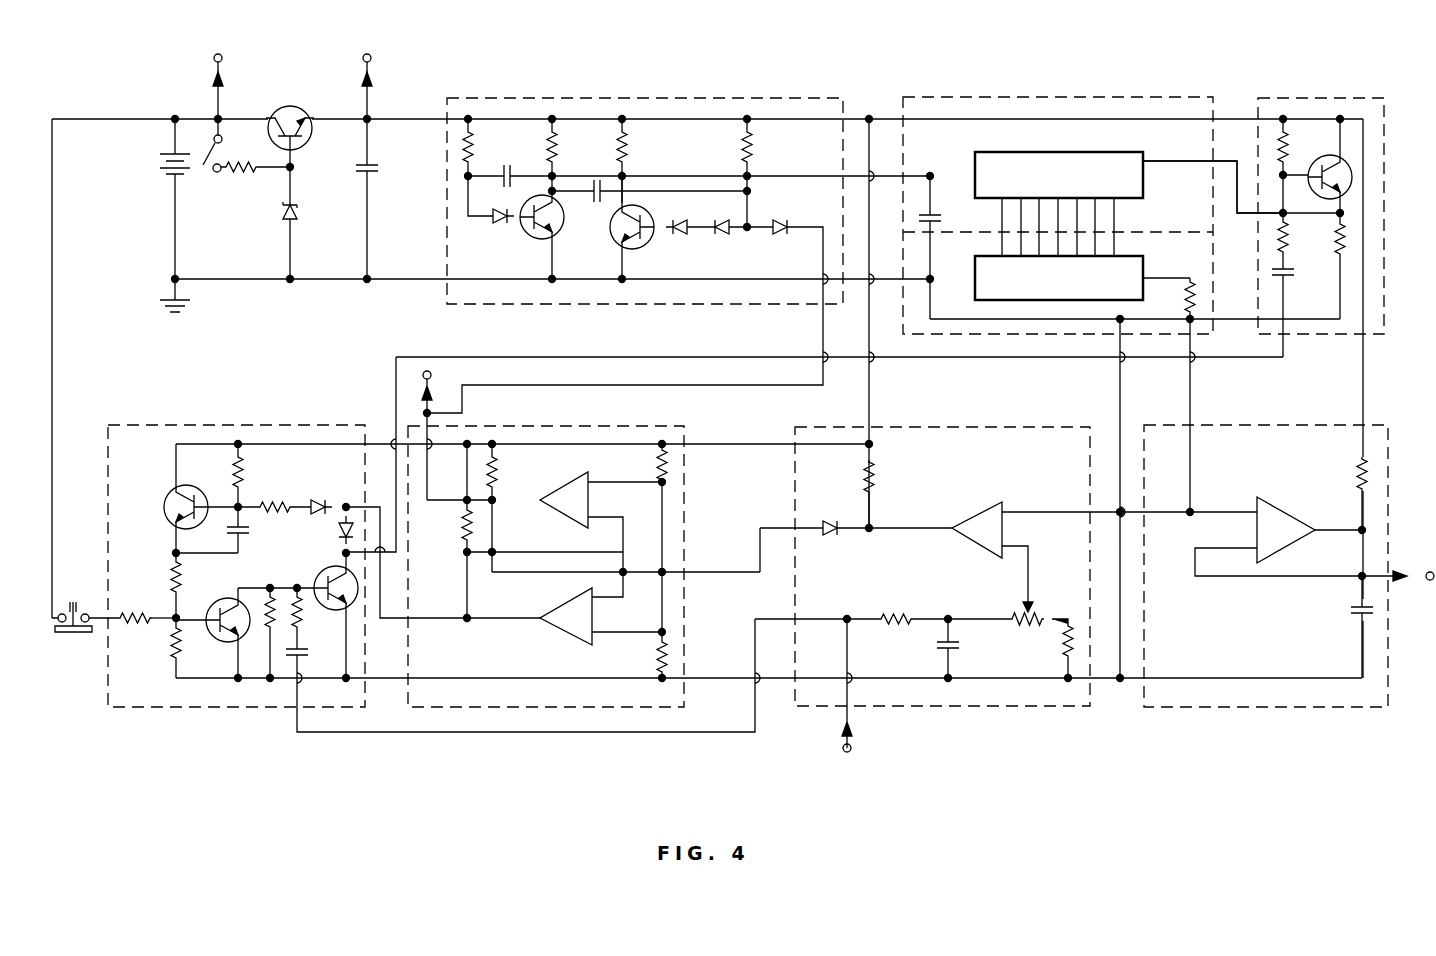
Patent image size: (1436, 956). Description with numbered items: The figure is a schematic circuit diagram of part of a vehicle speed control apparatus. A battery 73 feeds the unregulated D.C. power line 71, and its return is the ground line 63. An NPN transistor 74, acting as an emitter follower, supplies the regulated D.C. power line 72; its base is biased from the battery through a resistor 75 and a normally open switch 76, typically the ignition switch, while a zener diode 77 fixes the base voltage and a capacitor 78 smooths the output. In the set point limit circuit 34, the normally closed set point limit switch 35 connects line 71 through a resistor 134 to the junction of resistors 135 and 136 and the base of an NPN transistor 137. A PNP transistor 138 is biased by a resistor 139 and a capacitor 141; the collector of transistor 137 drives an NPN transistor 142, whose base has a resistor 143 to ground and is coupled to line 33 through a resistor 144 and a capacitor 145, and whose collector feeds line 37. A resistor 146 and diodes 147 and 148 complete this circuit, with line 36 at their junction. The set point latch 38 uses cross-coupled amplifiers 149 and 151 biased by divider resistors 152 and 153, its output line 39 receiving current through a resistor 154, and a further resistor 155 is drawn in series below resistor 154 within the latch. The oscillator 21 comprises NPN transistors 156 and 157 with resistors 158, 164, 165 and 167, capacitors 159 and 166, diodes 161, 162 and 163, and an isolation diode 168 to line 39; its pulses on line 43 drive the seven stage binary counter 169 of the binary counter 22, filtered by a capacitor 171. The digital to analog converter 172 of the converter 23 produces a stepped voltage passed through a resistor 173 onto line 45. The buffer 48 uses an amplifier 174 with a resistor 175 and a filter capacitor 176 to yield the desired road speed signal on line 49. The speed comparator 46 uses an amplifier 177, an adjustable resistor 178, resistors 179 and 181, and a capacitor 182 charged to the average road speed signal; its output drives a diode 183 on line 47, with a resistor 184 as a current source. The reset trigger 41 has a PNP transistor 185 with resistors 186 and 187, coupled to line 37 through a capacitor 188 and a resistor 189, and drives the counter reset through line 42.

The oscillator 21 is at (702, 92).
The binary counter 22 is at (1055, 92).
The converter 23 is at (1025, 338).
The line 33 is at (852, 744).
The set point limit circuit 34 is at (160, 420).
The set point limit switch 35 is at (72, 604).
The line 36 is at (392, 620).
The line 37 is at (408, 340).
The set point latch 38 is at (628, 422).
The line 39 is at (433, 380).
The reset trigger 41 is at (1285, 92).
The line 42 is at (1224, 161).
The line 43 is at (874, 168).
The line 45 is at (1193, 381).
The speed comparator 46 is at (1003, 420).
The line 47 is at (728, 570).
The buffer 48 is at (1267, 420).
The line 49 is at (1424, 572).
The ground line 63 is at (160, 301).
The unregulated D.C. power line 71 is at (218, 108).
The regulated D.C. power line 72 is at (370, 107).
The battery 73 is at (163, 149).
The NPN transistor 74 is at (291, 106).
The resistor 75 is at (237, 176).
The switch 76 is at (223, 148).
The zener diode 77 is at (286, 200).
The capacitor 78 is at (375, 150).
The resistor 134 is at (148, 624).
The resistor 135 is at (172, 578).
The resistor 136 is at (173, 663).
The NPN transistor 137 is at (233, 642).
The PNP transistor 138 is at (170, 493).
The resistor 139 is at (244, 470).
The capacitor 141 is at (242, 533).
The NPN transistor 142 is at (336, 566).
The resistor 143 is at (268, 590).
The resistor 144 is at (297, 590).
The capacitor 145 is at (300, 665).
The resistor 146 is at (266, 500).
The diode 147 is at (328, 500).
The diode 148 is at (336, 533).
The amplifier 149 is at (565, 490).
The amplifier 151 is at (570, 637).
The resistor 152 is at (658, 465).
The resistor 153 is at (658, 658).
The resistor 154 is at (498, 465).
The resistor 155 is at (462, 540).
The NPN transistor 156 is at (534, 250).
The NPN transistor 157 is at (640, 250).
The resistor 158 is at (563, 142).
The capacitor 159 is at (602, 206).
The diode 161 is at (730, 246).
The diode 162 is at (676, 240).
The diode 163 is at (502, 226).
The resistor 164 is at (479, 143).
The resistor 165 is at (636, 142).
The capacitor 166 is at (520, 158).
The resistor 167 is at (759, 142).
The isolation diode 168 is at (799, 244).
The seven stage binary counter 169 is at (1057, 201).
The capacitor 171 is at (937, 210).
The digital to analog converter 172 is at (1082, 278).
The resistor 173 is at (1194, 296).
The amplifier 174 is at (1292, 516).
The resistor 175 is at (1352, 466).
The filter capacitor 176 is at (1352, 608).
The amplifier 177 is at (979, 514).
The adjustable resistor 178 is at (1034, 600).
The resistor 179 is at (1060, 658).
The resistor 181 is at (890, 610).
The capacitor 182 is at (958, 646).
The diode 183 is at (838, 520).
The resistor 184 is at (879, 460).
The PNP transistor 185 is at (1330, 198).
The resistor 186 is at (1338, 256).
The resistor 187 is at (1288, 144).
The capacitor 188 is at (1292, 276).
The resistor 189 is at (1288, 237).